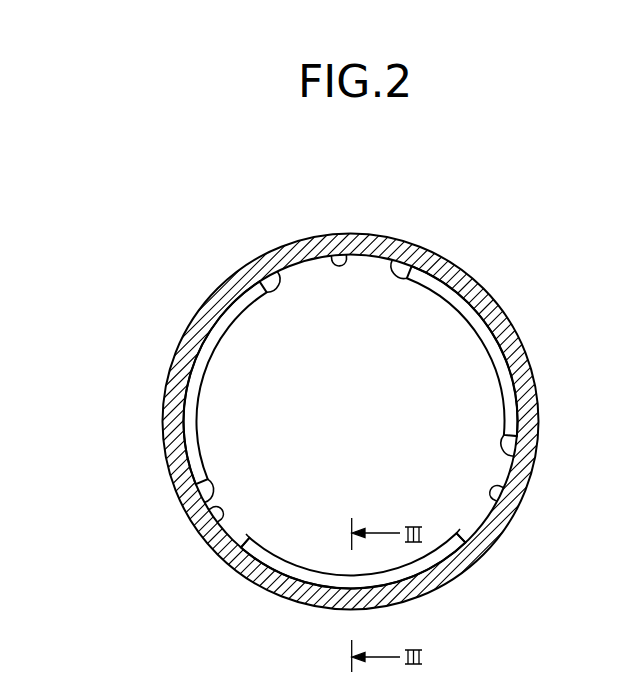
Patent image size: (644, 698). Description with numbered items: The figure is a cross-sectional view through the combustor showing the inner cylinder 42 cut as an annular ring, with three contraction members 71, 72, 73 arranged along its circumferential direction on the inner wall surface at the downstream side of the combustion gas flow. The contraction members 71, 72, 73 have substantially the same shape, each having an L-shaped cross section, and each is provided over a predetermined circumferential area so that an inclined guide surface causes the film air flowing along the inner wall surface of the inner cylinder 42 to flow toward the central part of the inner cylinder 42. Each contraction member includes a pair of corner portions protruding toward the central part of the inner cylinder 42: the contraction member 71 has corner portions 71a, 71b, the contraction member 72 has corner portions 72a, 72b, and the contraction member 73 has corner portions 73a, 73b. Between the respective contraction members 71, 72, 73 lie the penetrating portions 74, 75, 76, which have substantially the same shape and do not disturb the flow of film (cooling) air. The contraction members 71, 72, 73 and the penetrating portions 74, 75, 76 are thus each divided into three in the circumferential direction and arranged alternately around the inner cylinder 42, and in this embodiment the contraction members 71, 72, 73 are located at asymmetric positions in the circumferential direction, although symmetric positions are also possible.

The inner cylinder 42 is at (361, 233).
The contraction member 71 is at (487, 339).
The corner portion 71a is at (400, 258).
The corner portion 71b is at (517, 447).
The contraction member 72 is at (444, 551).
The corner portion 72a is at (468, 534).
The corner portion 72b is at (240, 575).
The contraction member 73 is at (193, 402).
The corner portion 73a is at (187, 513).
The corner portion 73b is at (272, 270).
The penetrating portion 74 is at (505, 498).
The penetrating portion 75 is at (213, 545).
The penetrating portion 76 is at (331, 256).